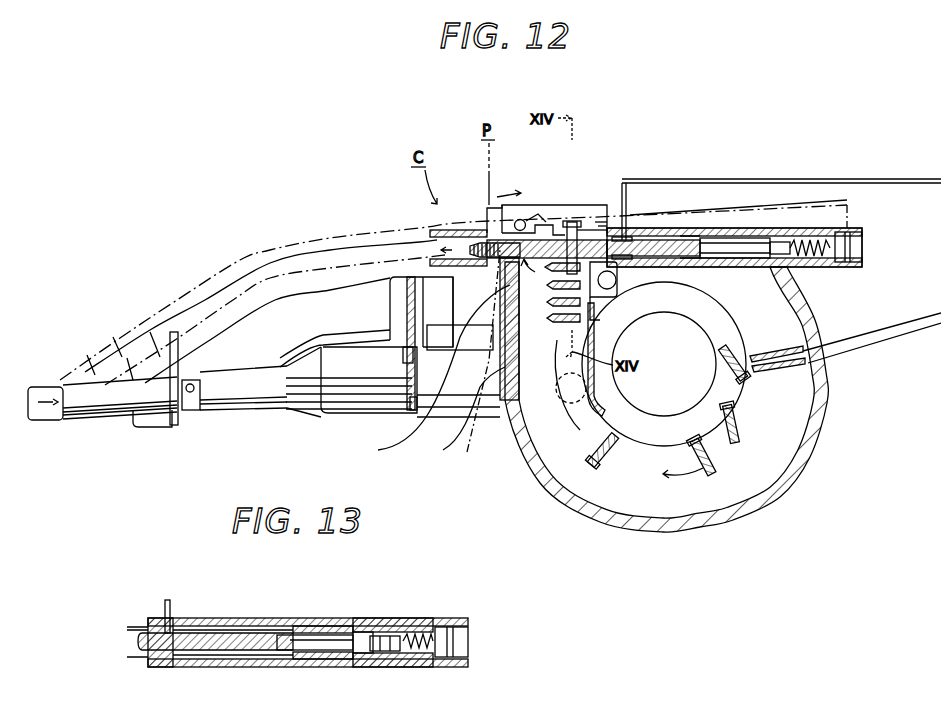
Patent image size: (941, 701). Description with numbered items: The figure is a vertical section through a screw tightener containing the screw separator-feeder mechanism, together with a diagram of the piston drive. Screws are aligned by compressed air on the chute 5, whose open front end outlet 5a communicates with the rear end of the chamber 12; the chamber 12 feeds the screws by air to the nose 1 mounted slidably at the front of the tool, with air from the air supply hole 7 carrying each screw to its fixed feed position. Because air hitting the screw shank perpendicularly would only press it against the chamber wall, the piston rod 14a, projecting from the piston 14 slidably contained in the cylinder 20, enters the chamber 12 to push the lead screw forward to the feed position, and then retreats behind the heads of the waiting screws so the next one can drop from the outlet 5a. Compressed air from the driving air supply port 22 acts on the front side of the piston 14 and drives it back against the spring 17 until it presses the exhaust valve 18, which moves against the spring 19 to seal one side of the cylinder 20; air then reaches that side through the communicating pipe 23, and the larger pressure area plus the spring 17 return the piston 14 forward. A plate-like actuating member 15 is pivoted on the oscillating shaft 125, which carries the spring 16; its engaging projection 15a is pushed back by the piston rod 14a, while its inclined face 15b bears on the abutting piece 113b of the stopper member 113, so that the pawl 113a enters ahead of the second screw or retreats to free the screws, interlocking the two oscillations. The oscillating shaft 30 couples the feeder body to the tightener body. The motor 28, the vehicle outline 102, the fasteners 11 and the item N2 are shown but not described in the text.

In FIG. 12, the nose 1 is at (131, 395).
In FIG. 12, the chute 5 is at (543, 397).
In FIG. 12, the front end outlet 5a is at (545, 235).
In FIG. 12, the air supply hole 7 is at (622, 215).
In FIG. 12, the fan blades / screws 11 is at (470, 247).
In FIG. 12, the chamber 12 is at (490, 246).
In FIG. 13, the chamber 12 is at (135, 627).
In FIG. 12, the piston 14 is at (652, 242).
In FIG. 13, the piston 14 is at (300, 636).
In FIG. 12, the piston rod 14a is at (609, 232).
In FIG. 13, the piston rod 14a is at (227, 633).
In FIG. 12, the actuating member 15 is at (580, 236).
In FIG. 12, the engaging projection 15a is at (571, 240).
In FIG. 12, the inclined face 15b is at (598, 220).
In FIG. 12, the spring 16 is at (525, 222).
In FIG. 12, the spring 17 is at (673, 240).
In FIG. 13, the spring 17 is at (358, 632).
In FIG. 12, the exhaust valve 18 is at (797, 230).
In FIG. 13, the exhaust valve 18 is at (392, 637).
In FIG. 12, the spring 19 is at (820, 230).
In FIG. 13, the spring 19 is at (408, 637).
In FIG. 12, the cylinder 20 is at (764, 232).
In FIG. 13, the cylinder 20 is at (270, 620).
In FIG. 12, the driving air supply port 22 is at (628, 232).
In FIG. 13, the driving air supply port 22 is at (172, 618).
In FIG. 12, the communicating pipe 23 is at (692, 232).
In FIG. 13, the communicating pipe 23 is at (378, 636).
In FIG. 12, the motor 28 is at (330, 342).
In FIG. 12, the oscillating shaft 30 is at (560, 400).
In FIG. 12, the vehicle body outline 102 is at (197, 286).
In FIG. 12, the stopper member 113 is at (427, 373).
In FIG. 12, the pawl 113a is at (470, 360).
In FIG. 12, the abutting piece 113b is at (602, 222).
In FIG. 12, the oscillating shaft 125 is at (520, 220).
In FIG. 12, the cable N2 is at (462, 418).